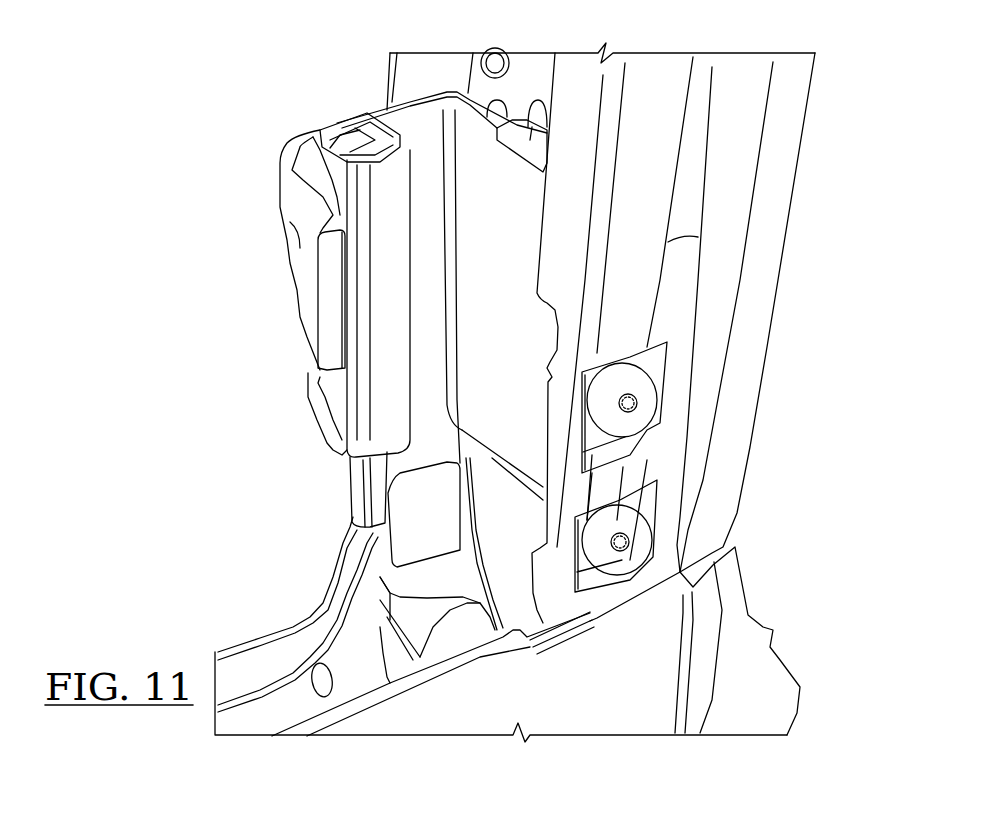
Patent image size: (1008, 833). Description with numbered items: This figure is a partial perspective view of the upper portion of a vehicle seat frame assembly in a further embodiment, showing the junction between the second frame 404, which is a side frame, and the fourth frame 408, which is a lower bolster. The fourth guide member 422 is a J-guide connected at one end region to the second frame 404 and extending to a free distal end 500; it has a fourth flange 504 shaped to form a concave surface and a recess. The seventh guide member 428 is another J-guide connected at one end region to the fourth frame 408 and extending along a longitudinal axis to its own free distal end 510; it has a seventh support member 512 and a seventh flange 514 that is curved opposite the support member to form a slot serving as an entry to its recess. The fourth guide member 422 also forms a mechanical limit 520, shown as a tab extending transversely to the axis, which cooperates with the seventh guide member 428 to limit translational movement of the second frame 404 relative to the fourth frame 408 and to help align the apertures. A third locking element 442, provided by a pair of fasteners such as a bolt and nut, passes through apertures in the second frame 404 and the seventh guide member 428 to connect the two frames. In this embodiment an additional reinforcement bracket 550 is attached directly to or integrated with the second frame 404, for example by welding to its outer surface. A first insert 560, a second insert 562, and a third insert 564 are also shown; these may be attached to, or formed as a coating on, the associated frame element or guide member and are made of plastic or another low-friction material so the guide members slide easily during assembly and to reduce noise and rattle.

The second frame 404 is at (643, 296).
The fourth frame 408 is at (367, 620).
The fourth guide member 422 is at (350, 252).
The seventh guide member 428 is at (679, 338).
The third locking element 442 is at (647, 403).
The distal end 500 is at (382, 435).
The fourth flange 504 is at (385, 377).
The distal end 510 is at (417, 102).
The seventh support member 512 is at (503, 215).
The seventh flange 514 is at (305, 136).
The mechanical limit 520 is at (533, 130).
The reinforcement bracket 550 is at (307, 220).
The first insert 560 is at (328, 342).
The second insert 562 is at (342, 148).
The third insert 564 is at (390, 128).